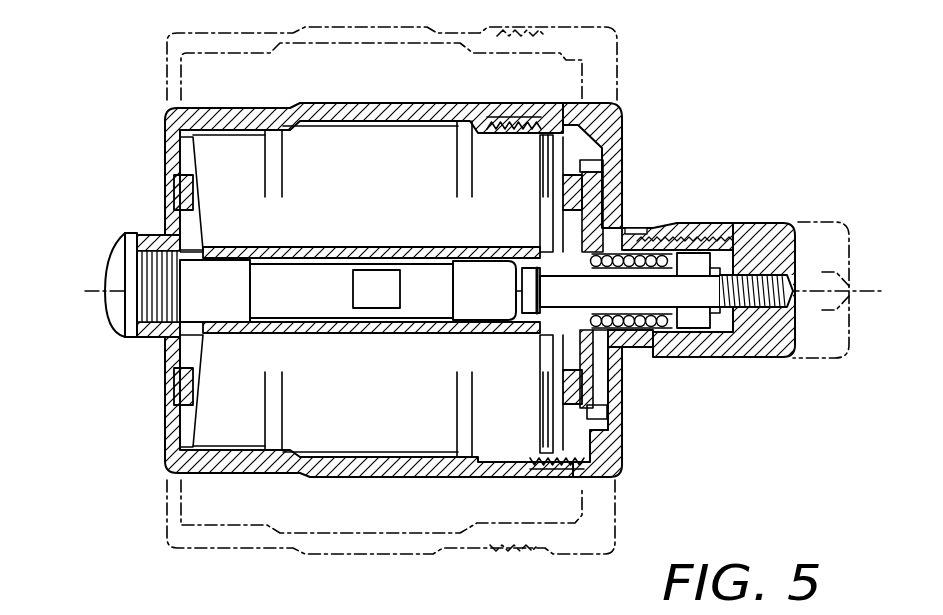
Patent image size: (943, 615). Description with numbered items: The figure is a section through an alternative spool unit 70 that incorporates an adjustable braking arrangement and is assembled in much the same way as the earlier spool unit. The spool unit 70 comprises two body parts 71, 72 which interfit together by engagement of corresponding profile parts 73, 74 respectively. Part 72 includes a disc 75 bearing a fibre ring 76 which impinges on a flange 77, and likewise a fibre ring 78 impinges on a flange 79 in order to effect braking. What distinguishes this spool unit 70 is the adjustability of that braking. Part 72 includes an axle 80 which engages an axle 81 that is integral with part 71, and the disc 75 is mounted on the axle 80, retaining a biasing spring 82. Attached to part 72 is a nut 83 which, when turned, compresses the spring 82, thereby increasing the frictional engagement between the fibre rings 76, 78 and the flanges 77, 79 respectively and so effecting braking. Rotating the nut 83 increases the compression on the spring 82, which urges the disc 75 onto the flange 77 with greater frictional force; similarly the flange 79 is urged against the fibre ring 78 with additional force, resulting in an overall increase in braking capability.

The spool unit 70 is at (743, 112).
The body part 71 is at (167, 147).
The body part 72 is at (628, 133).
The profile part 73 is at (500, 133).
The profile part 74 is at (512, 112).
The disc 75 is at (603, 208).
The fibre ring 76 is at (620, 383).
The flange 77 is at (548, 408).
The fibre ring 78 is at (176, 389).
The flange 79 is at (203, 378).
The axle 80 is at (795, 270).
The axle 81 is at (210, 277).
The biasing spring 82 is at (660, 243).
The nut 83 is at (760, 358).